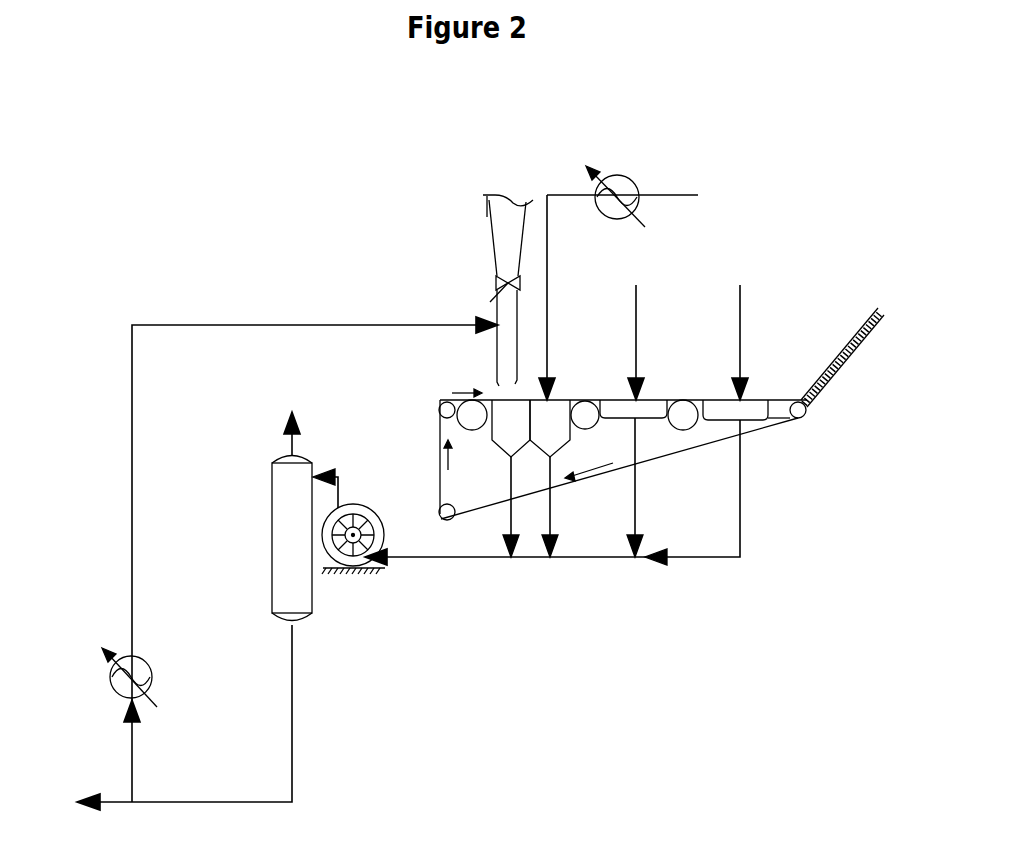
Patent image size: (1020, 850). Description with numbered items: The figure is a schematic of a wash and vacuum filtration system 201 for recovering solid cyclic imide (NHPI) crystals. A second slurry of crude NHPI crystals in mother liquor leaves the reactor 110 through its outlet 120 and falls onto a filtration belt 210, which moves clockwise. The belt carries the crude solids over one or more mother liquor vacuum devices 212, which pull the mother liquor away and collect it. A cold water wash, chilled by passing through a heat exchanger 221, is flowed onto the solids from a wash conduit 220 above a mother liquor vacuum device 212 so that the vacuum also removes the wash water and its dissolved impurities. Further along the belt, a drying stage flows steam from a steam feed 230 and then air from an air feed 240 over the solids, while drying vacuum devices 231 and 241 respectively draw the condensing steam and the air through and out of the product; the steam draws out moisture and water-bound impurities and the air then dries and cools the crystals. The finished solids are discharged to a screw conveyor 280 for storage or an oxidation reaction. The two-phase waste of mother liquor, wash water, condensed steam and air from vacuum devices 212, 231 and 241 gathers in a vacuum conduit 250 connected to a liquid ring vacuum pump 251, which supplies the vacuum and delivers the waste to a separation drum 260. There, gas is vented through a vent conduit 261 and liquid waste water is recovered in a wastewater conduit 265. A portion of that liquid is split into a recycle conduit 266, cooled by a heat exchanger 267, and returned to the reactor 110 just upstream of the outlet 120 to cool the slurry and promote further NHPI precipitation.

The wash and vacuum filtration system 201 is at (146, 206).
The reactor 110 is at (490, 212).
The outlet 120 is at (493, 297).
The filtration belt 210 is at (438, 412).
The mother liquor vacuum devices 212 is at (509, 432).
The wash conduit 220 is at (618, 286).
The heat exchanger 221 is at (620, 191).
The steam feed 230 is at (649, 342).
The drying vacuum device 231 is at (628, 405).
The air feed 240 is at (752, 342).
The drying vacuum device 241 is at (728, 406).
The vacuum conduit 250 is at (515, 565).
The liquid ring vacuum pump 251 is at (373, 573).
The separation drum 260 is at (285, 540).
The vent conduit 261 is at (288, 424).
The wastewater conduit 265 is at (184, 717).
The recycle conduit 266 is at (311, 552).
The heat exchanger 267 is at (146, 677).
The screw conveyor 280 is at (842, 357).